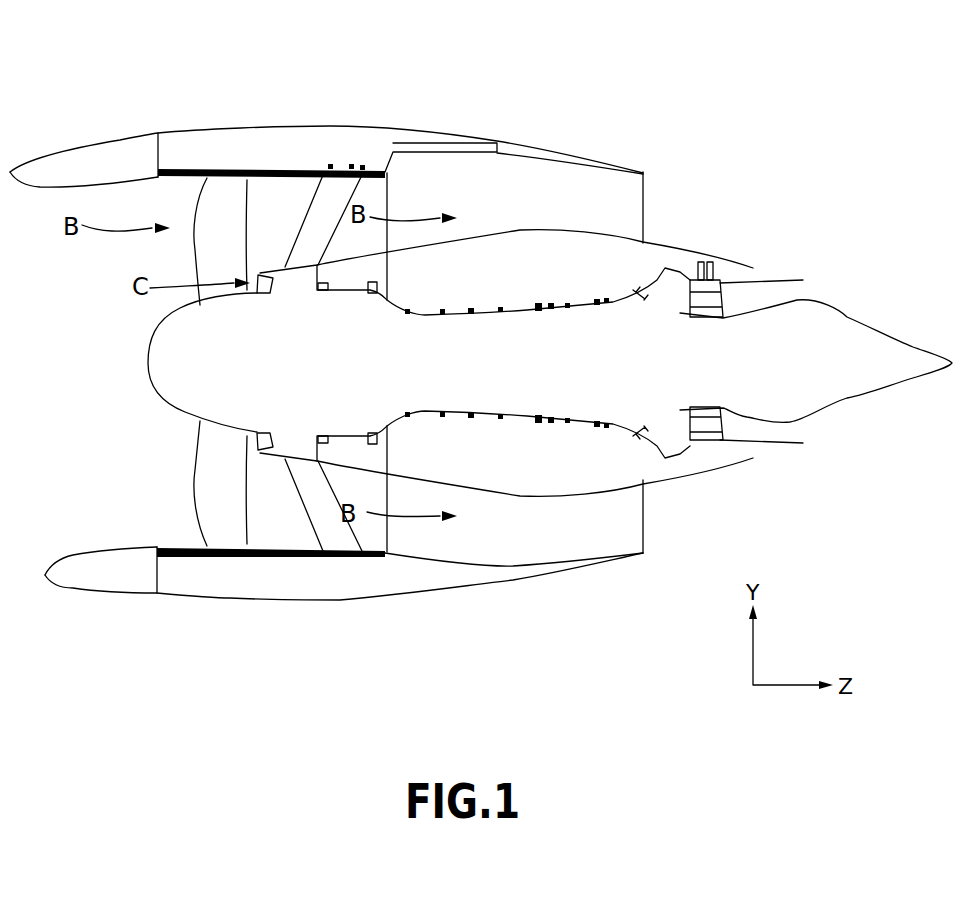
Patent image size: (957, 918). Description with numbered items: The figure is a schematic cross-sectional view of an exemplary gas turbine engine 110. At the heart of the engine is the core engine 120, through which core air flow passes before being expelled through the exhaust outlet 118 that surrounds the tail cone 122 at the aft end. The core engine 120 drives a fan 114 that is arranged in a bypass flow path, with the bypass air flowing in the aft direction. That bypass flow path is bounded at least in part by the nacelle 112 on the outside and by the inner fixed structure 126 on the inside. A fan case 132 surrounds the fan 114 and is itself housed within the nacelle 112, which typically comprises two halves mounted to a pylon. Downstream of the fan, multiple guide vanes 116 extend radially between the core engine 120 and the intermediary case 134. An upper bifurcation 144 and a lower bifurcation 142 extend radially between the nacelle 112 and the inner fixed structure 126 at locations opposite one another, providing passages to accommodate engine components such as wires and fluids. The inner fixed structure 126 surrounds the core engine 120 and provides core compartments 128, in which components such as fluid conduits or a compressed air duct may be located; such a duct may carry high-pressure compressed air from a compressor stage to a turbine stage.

The gas turbine engine 110 is at (656, 80).
The nacelle 112 is at (193, 116).
The fan 114 is at (203, 472).
The guide vanes 116 is at (320, 224).
The exhaust outlet 118 is at (800, 292).
The core engine 120 is at (528, 294).
The tail cone 122 is at (843, 393).
The inner fixed structure (IFS) 126 is at (540, 225).
The core compartment 128 is at (542, 476).
The fan case 132 is at (183, 557).
The intermediary case (IMC) 134 is at (360, 557).
The lower bifurcation 142 is at (618, 542).
The upper bifurcation 144 is at (650, 190).